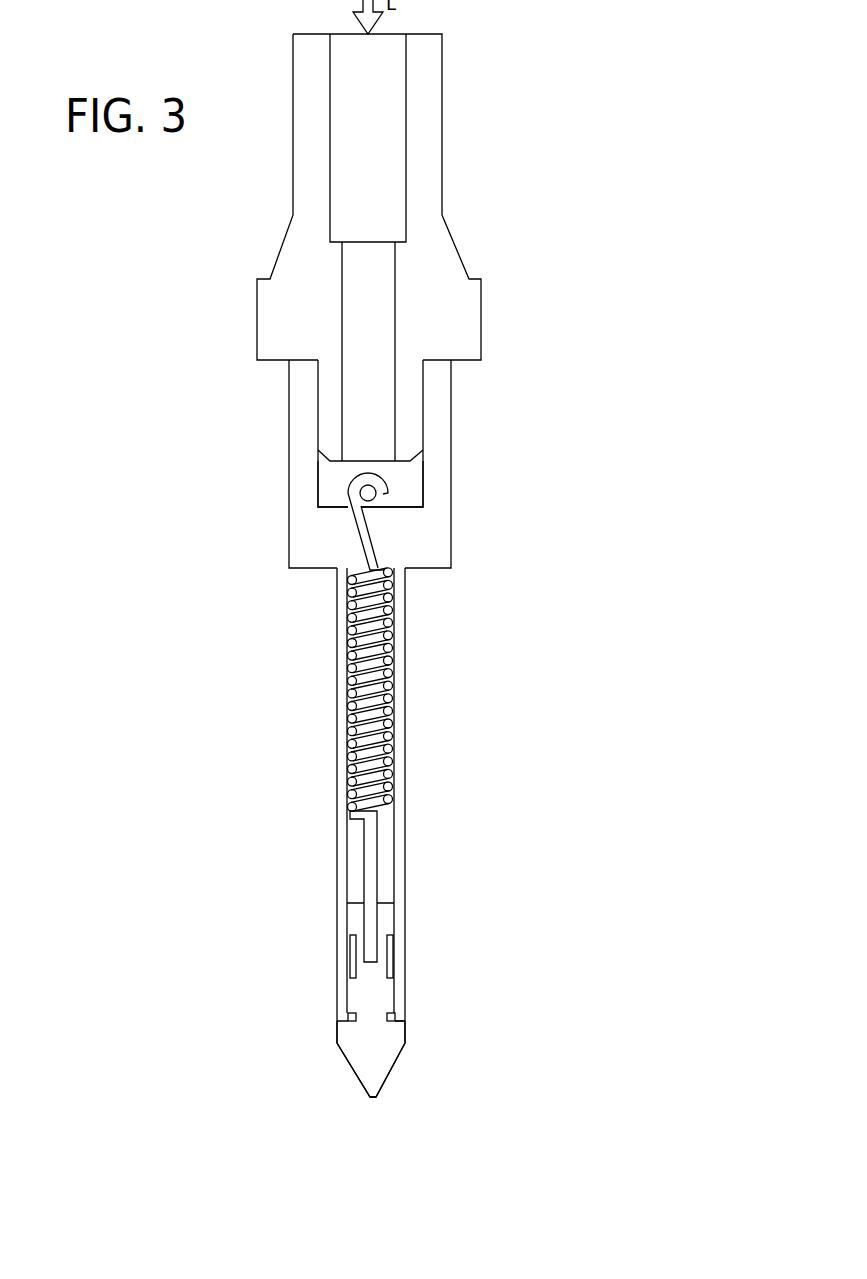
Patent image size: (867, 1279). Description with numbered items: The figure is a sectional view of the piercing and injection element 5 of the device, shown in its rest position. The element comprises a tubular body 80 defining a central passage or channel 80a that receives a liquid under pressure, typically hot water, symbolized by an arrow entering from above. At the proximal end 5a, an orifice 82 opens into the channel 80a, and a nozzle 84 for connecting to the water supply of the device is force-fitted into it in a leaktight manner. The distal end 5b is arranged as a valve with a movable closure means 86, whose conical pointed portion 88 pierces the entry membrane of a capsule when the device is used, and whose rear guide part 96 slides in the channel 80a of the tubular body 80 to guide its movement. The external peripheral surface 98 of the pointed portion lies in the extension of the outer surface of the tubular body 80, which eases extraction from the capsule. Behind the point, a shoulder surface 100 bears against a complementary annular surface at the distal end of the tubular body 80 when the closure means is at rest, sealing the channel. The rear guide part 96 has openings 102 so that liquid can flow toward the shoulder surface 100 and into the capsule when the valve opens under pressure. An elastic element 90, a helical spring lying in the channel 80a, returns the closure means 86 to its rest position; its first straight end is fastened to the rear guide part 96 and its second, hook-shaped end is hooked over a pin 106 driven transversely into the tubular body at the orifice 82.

The piercing and injection element 5 is at (239, 782).
The proximal end 5a is at (286, 500).
The distal end 5b is at (332, 1030).
The tubular body 80 is at (336, 906).
The central passage or channel 80a is at (383, 817).
The orifice 82 is at (403, 480).
The nozzle 84 is at (435, 258).
The movable closure means 86 is at (354, 1077).
The pointed portion 88 is at (373, 1098).
The elastic element 90 is at (369, 657).
The rear guide part 96 is at (369, 992).
The external peripheral surface 98 is at (407, 1035).
The shoulder surface 100 is at (397, 1020).
The openings 102 is at (349, 1020).
The pin 106 is at (371, 496).